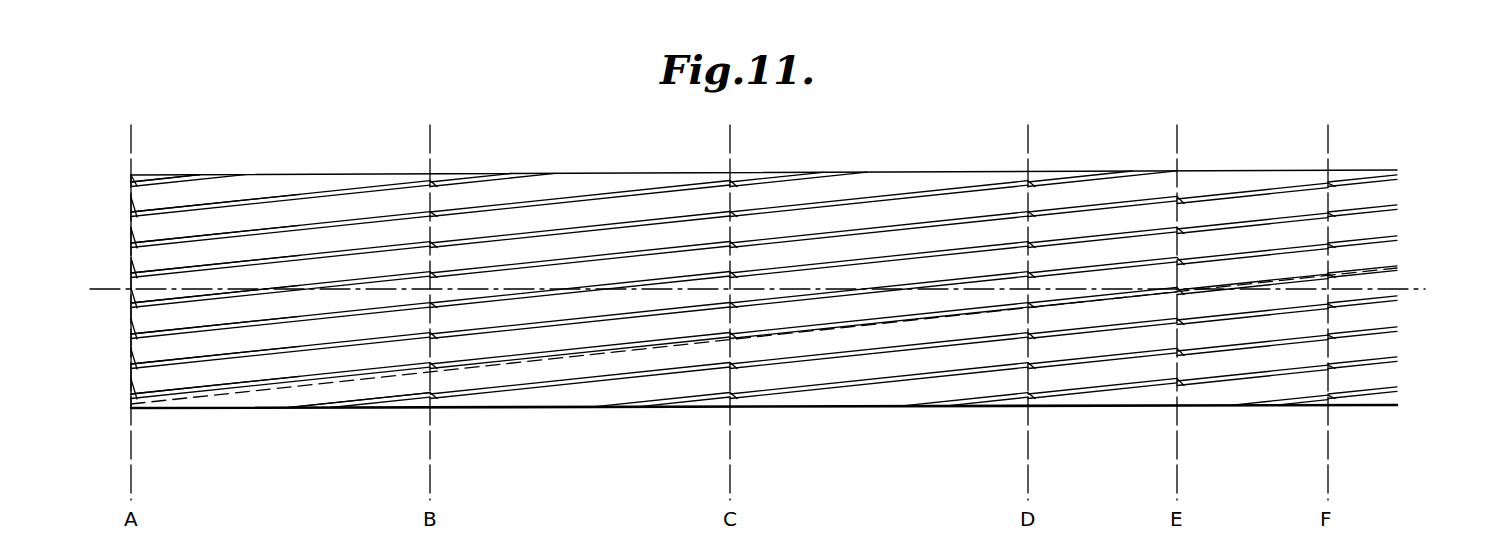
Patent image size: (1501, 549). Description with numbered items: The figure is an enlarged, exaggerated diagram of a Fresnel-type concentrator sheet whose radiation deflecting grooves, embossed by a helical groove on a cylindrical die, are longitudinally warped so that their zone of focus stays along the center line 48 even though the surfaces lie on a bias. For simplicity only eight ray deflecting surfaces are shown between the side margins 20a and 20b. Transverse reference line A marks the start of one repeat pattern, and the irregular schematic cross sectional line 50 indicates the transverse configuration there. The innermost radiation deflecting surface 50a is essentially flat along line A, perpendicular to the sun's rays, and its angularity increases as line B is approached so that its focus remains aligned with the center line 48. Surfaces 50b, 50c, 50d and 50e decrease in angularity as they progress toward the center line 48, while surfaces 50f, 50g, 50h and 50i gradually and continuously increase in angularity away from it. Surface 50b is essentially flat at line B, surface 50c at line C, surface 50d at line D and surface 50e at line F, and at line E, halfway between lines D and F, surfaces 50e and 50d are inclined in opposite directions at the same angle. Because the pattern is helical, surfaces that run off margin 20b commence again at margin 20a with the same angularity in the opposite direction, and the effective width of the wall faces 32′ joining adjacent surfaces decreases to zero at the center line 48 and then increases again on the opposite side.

The margin 20a is at (380, 409).
The side margin 20b is at (292, 174).
The wall faces 32′ is at (145, 406).
The center line 48 is at (550, 290).
The schematic cross sectional line 50 is at (148, 199).
The radiation deflecting surface 50a is at (135, 297).
The surface 50b is at (136, 322).
The surface 50c is at (136, 354).
The surface 50d is at (136, 381).
The surface 50e is at (133, 406).
The surface 50f is at (133, 262).
The surface 50g is at (133, 232).
The surface 50h is at (135, 200).
The surface 50i is at (132, 175).